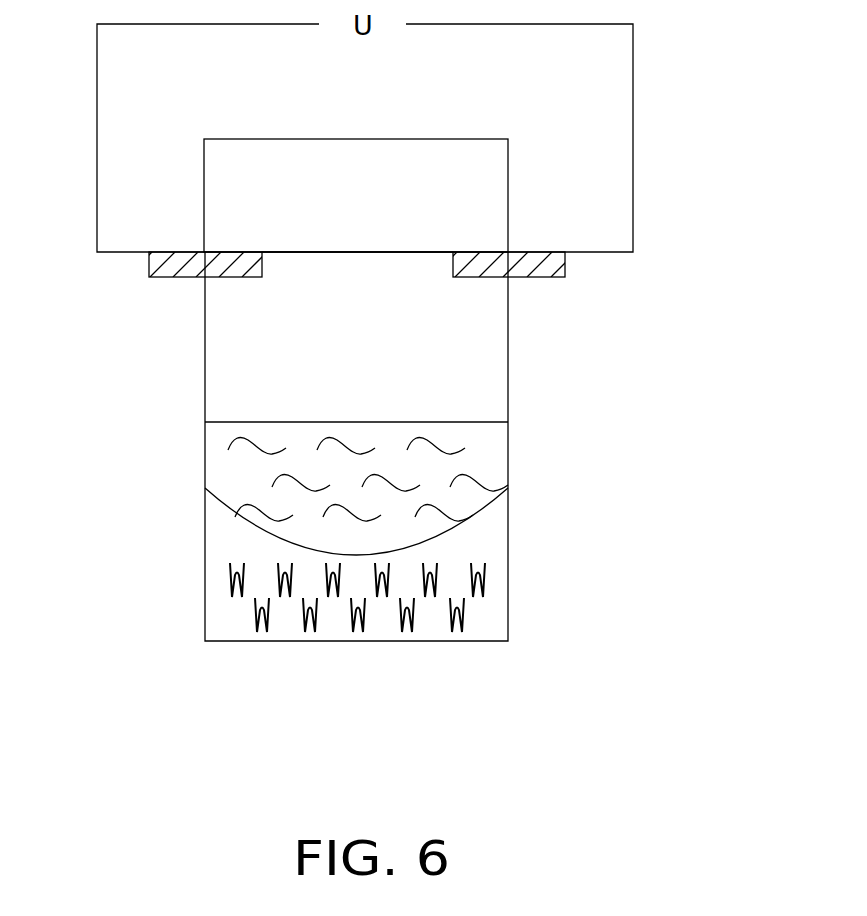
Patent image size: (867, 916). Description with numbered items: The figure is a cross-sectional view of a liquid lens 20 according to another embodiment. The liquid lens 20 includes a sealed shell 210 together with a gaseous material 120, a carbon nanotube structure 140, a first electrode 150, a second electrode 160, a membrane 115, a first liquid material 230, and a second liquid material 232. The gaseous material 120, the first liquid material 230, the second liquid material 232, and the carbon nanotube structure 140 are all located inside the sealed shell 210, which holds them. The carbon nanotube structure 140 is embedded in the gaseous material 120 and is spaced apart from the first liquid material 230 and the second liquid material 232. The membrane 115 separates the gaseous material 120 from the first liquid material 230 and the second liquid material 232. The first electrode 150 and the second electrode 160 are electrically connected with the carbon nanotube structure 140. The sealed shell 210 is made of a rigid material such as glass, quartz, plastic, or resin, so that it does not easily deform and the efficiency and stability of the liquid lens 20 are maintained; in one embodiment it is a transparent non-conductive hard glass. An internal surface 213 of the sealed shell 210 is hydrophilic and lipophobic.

The liquid lens 20 is at (365, 138).
The sealed shell 210 is at (481, 160).
The carbon nanotube structure 140 is at (507, 216).
The first electrode 150 is at (169, 285).
The second electrode 160 is at (560, 300).
The gaseous material 120 is at (278, 446).
The membrane 115 is at (408, 384).
The first liquid material 230 is at (279, 479).
The second liquid material 232 is at (270, 584).
The internal surface 213 is at (427, 543).